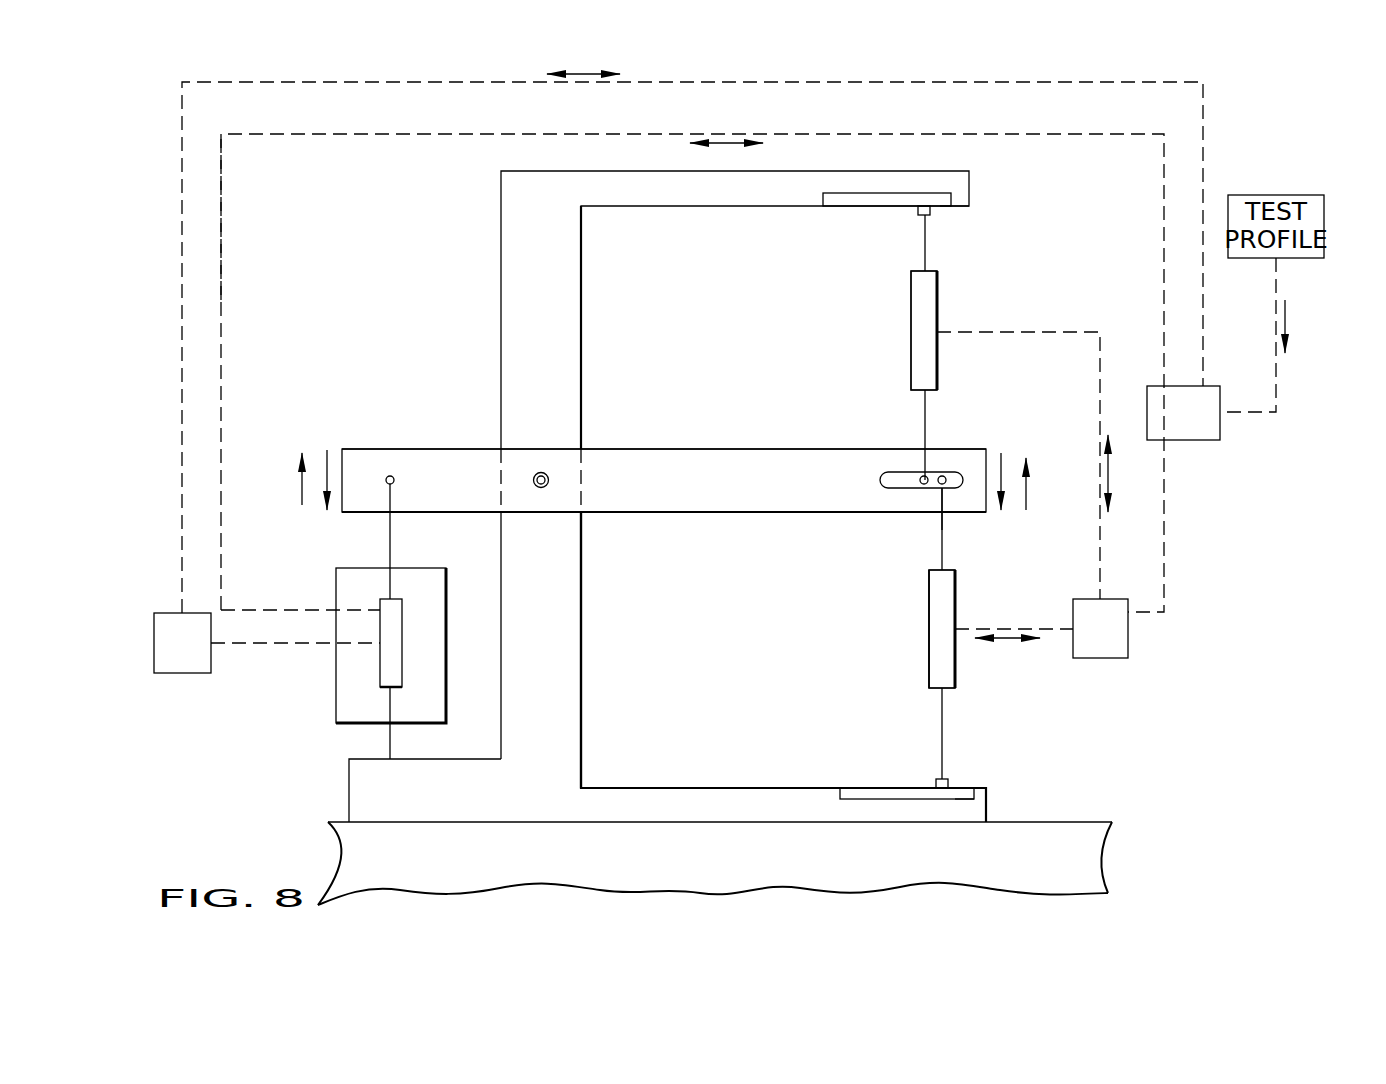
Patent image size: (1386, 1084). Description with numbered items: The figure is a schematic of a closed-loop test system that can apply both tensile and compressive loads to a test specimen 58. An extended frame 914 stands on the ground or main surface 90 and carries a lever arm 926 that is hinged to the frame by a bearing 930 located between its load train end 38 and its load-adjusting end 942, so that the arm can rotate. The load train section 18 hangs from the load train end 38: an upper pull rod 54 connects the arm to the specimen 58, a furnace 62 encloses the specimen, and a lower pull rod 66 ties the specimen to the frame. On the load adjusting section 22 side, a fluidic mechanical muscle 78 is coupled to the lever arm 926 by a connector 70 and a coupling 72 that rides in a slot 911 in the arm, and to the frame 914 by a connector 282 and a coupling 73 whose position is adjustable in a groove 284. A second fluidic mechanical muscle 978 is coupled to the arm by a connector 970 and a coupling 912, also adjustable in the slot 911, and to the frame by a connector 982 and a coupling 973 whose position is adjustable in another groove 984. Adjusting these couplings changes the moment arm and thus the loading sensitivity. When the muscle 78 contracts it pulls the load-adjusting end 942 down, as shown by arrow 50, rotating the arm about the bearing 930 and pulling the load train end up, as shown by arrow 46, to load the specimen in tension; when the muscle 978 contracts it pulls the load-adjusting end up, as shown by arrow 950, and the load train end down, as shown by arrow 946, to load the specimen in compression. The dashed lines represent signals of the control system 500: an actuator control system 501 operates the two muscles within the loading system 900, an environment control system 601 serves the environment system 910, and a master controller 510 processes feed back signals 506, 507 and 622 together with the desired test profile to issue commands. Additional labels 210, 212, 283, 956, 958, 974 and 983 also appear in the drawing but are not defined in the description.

The load train section 18 is at (322, 584).
The load adjusting section 22 is at (965, 611).
The load train end 38 is at (397, 436).
The upward pointing arrow 46 is at (300, 490).
The downward pointing arrow 50 is at (1005, 480).
The upper pull rod 54 is at (392, 540).
The test specimen 58 is at (388, 668).
The furnace 62 is at (330, 684).
The lower pull rod 66 is at (388, 742).
The connector 70 is at (945, 565).
The coupling 72 is at (945, 486).
The coupling 73 is at (948, 779).
The fluidic mechanical muscle 78 is at (929, 616).
The ground or main surface 90 is at (782, 821).
The frame 210 is at (716, 322).
The frame column 212 is at (669, 410).
The connector 282 is at (942, 731).
The base plate end 283 is at (966, 795).
The groove 284 is at (866, 795).
The control system 500 is at (1113, 383).
The actuator control system 501 is at (1041, 628).
The feed back signal 506 is at (312, 136).
The feed back signal 507 is at (465, 133).
The master controller 510 is at (1183, 413).
The environment control system 601 is at (267, 643).
The feed back signal 622 is at (1040, 83).
The loading system 900 is at (1027, 264).
The environment system 910 is at (840, 661).
The slot 911 is at (900, 471).
The coupling 912 is at (922, 485).
The extended frame 914 is at (600, 665).
The lever arm 926 is at (708, 449).
The bearing 930 is at (549, 481).
The load-adjusting end 942 is at (950, 416).
The arrow 946 is at (327, 468).
The arrow 950 is at (1026, 496).
The beam end 956 is at (343, 530).
The pin 958 is at (394, 479).
The connector 970 is at (921, 410).
The coupling 973 is at (930, 214).
The rod 974 is at (900, 546).
The fluidic mechanical muscle 978 is at (940, 308).
The connector 982 is at (925, 250).
The frame mount 983 is at (948, 207).
The groove 984 is at (828, 200).